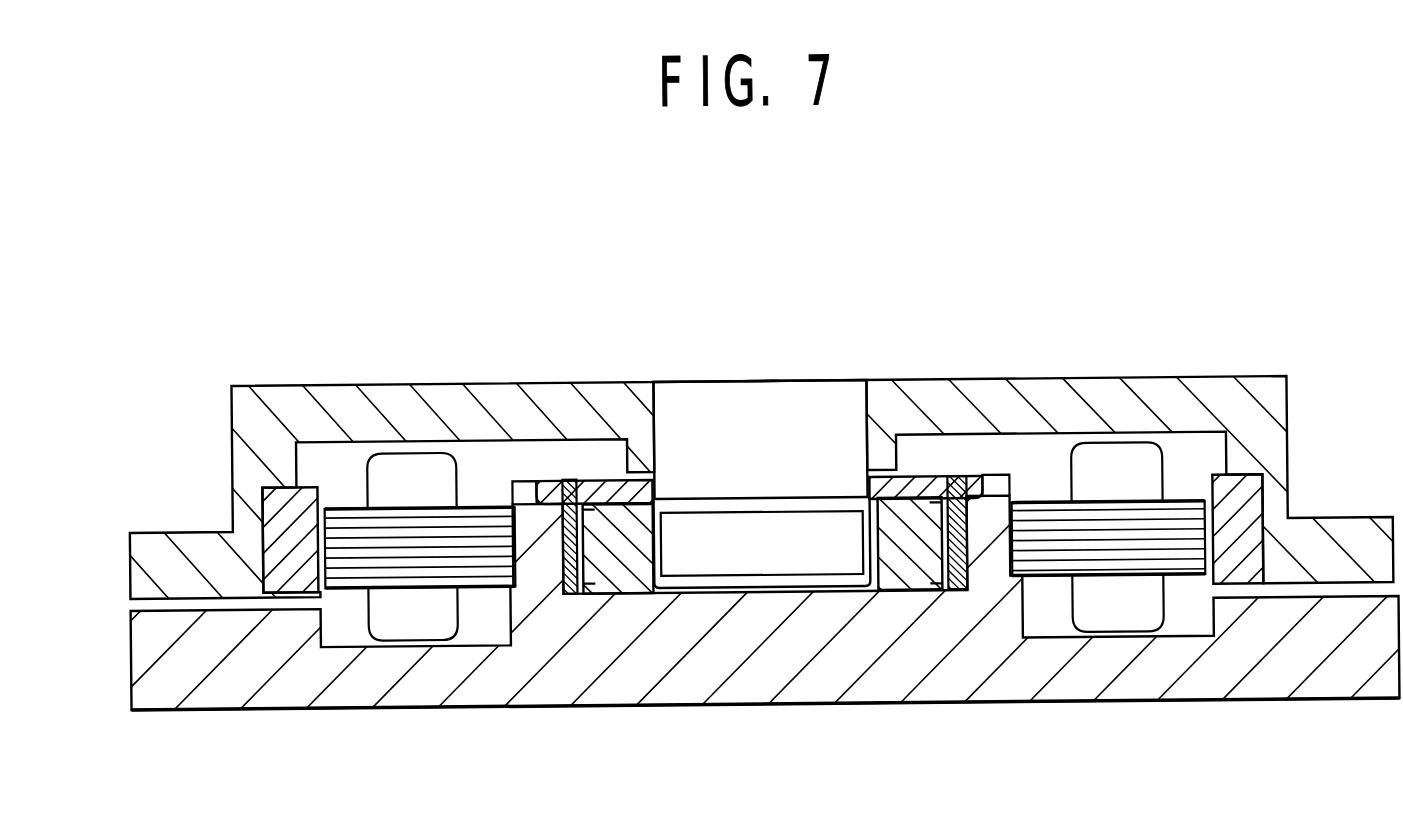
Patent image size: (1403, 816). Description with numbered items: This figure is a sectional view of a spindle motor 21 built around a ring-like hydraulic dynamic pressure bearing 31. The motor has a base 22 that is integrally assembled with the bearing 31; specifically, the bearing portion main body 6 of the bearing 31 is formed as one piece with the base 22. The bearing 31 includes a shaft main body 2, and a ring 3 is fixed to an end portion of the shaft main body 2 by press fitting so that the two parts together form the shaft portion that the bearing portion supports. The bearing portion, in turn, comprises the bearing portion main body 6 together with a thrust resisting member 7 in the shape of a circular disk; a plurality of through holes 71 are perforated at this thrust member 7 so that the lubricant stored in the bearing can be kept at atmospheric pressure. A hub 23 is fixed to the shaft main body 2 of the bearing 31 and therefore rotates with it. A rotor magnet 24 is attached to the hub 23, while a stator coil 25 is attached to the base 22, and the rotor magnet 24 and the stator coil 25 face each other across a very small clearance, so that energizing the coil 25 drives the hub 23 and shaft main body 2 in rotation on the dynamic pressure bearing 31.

The spindle motor 21 is at (994, 298).
The hub 23 is at (445, 399).
The base 22 is at (692, 680).
The rotor magnet 24 is at (285, 537).
The stator coil 25 is at (480, 567).
The shaft main body 2 is at (705, 420).
The ring-like hydraulic dynamic pressure bearing 31 is at (760, 380).
The ring 3 is at (628, 563).
The thrust resisting member 7 is at (922, 478).
The through holes 71 is at (567, 478).
The bearing portion main body 6 is at (993, 493).